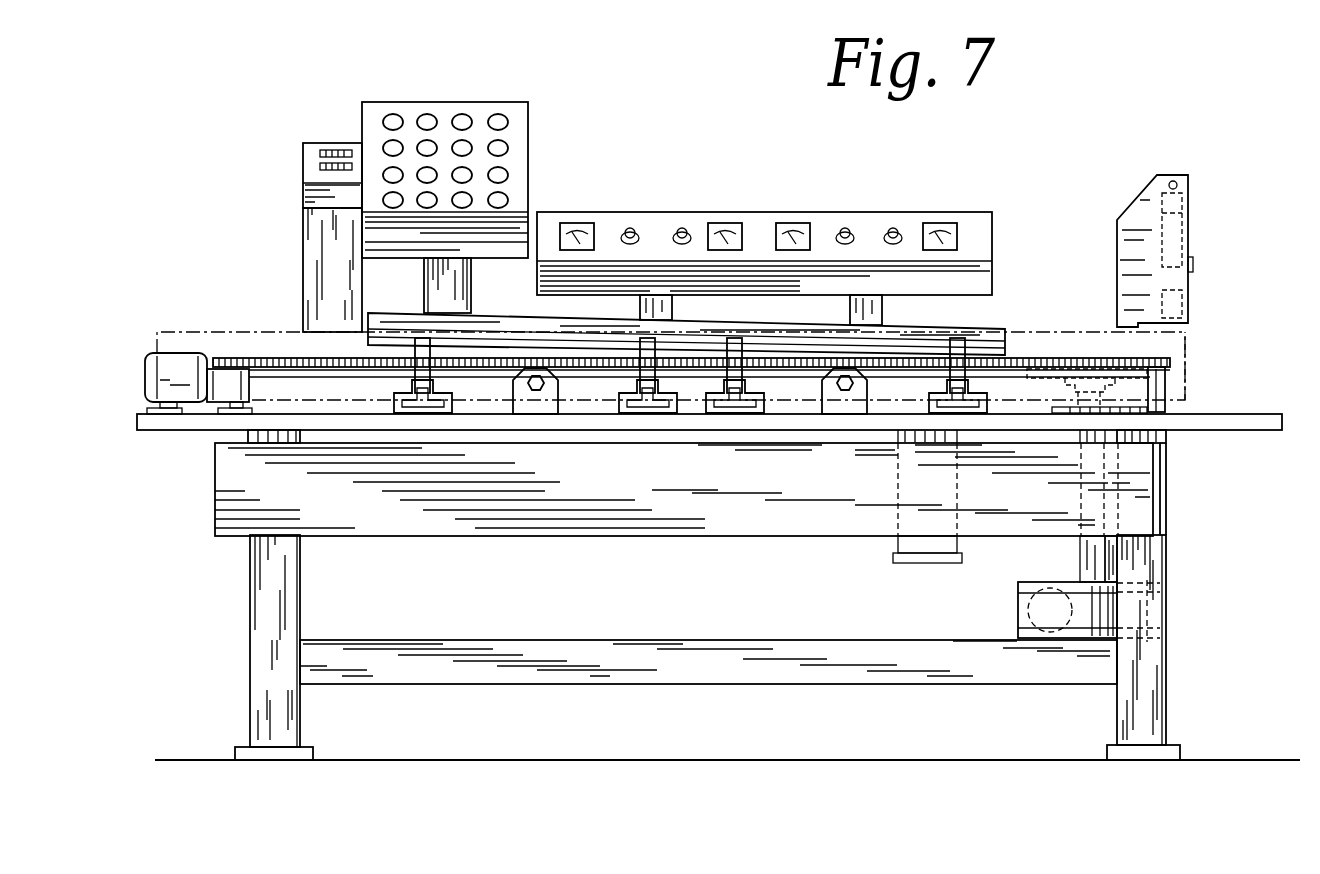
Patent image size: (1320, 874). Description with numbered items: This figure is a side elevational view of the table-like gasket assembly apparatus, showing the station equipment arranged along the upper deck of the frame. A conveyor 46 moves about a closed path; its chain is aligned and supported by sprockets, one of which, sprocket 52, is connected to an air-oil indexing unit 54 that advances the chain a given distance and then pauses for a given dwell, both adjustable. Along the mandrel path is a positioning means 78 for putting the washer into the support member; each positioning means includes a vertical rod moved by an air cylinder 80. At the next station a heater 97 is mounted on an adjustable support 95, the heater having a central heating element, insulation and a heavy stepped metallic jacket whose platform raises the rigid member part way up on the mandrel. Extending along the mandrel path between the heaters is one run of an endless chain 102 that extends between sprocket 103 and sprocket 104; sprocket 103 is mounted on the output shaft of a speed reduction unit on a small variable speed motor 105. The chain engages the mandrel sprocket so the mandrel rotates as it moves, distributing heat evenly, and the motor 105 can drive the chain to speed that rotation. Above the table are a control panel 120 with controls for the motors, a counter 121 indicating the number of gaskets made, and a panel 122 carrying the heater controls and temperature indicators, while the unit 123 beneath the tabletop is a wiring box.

The conveyor 46 is at (1190, 336).
The sprocket 52 is at (1133, 379).
The air-oil indexing unit 54 is at (1015, 602).
The positioning means 78 is at (1182, 298).
The air cylinder 80 is at (1185, 218).
The adjustable support 95 is at (527, 405).
The heater 97 is at (983, 335).
The endless chain 102 is at (280, 358).
The sprocket 103 is at (228, 358).
The sprocket 104 is at (1168, 356).
The variable speed motor 105 is at (165, 373).
The control panel 120 is at (525, 102).
The counter 121 is at (303, 155).
The panel 122 is at (762, 218).
The wiring box 123 is at (635, 493).